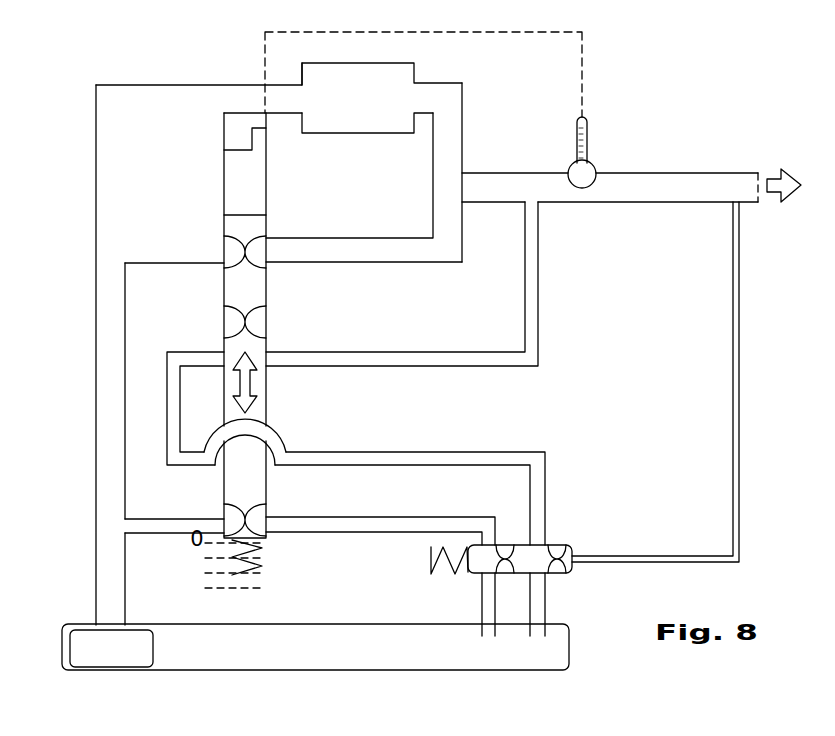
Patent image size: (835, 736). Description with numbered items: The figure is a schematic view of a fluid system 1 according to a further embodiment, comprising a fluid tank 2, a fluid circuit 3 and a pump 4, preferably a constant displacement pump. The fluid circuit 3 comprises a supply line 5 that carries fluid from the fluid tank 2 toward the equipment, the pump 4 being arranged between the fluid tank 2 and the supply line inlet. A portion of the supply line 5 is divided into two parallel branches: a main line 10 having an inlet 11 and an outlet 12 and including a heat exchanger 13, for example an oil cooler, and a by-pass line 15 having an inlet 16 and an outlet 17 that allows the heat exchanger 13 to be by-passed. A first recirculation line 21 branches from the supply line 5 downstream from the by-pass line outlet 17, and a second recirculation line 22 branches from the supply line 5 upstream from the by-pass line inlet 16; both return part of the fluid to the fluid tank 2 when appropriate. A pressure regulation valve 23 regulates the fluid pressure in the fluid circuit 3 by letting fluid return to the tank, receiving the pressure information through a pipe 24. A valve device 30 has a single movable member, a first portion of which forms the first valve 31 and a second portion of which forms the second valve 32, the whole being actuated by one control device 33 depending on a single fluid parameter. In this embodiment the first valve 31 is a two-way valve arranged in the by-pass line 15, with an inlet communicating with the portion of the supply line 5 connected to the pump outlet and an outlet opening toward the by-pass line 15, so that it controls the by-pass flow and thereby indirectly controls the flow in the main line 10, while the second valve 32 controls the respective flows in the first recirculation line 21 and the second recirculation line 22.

The fluid system 1 is at (778, 97).
The fluid tank 2 is at (340, 664).
The fluid circuit 3 is at (78, 262).
The pump 4 is at (111, 648).
The supply line 5 is at (96, 487).
The main line 10 is at (290, 72).
The inlet of main line 11 is at (230, 97).
The outlet of main line 12 is at (448, 152).
The heat exchanger 13 is at (367, 98).
The by-pass line 15 is at (424, 252).
The inlet of by-pass line 16 is at (268, 242).
The outlet of by-pass line 17 is at (453, 228).
The first recirculation line 21 is at (540, 343).
The second recirculation line 22 is at (320, 533).
The pressure regulation valve 23 is at (474, 573).
The pipe 24 is at (740, 466).
The valve device 30 is at (214, 232).
The first valve 31 is at (282, 252).
The second valve 32 is at (303, 310).
The control device 33 is at (224, 187).